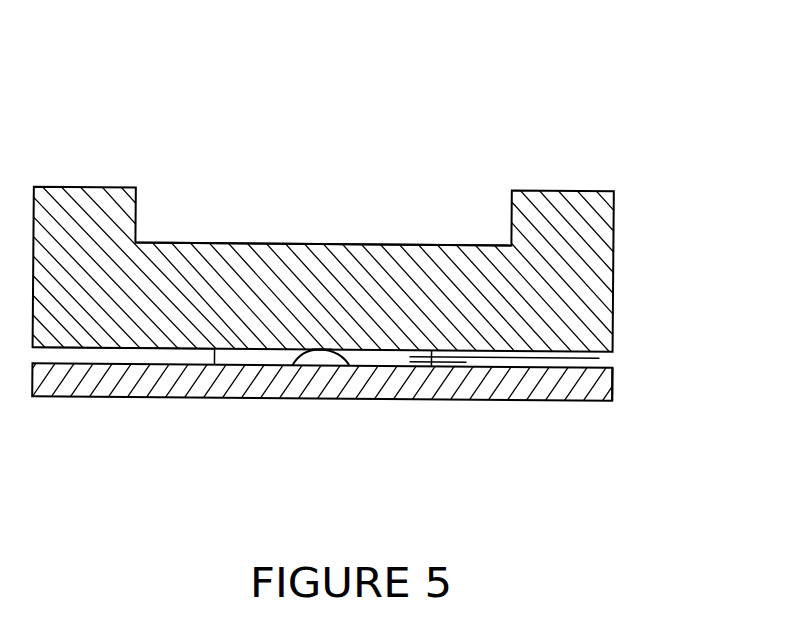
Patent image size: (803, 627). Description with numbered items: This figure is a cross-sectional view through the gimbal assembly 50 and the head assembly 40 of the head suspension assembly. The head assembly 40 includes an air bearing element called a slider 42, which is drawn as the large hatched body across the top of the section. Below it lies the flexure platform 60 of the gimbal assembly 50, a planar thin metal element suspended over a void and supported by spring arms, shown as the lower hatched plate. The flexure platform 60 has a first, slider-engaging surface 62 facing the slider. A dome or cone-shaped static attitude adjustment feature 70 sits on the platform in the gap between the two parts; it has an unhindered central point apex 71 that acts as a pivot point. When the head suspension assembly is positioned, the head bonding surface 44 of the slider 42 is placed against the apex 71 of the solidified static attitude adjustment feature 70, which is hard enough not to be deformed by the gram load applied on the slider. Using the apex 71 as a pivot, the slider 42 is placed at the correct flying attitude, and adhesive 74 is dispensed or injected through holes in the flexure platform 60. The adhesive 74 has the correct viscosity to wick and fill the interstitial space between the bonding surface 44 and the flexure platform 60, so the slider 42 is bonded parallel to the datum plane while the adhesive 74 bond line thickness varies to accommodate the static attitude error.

The head assembly 40 is at (79, 185).
The slider 42 is at (316, 243).
The head bonding surface 44 is at (75, 352).
The gimbal assembly 50 is at (625, 387).
The flexure platform 60 is at (425, 377).
The first (slider-engaging) surface 62 is at (600, 356).
The static attitude adjustment feature 70 is at (326, 355).
The apex 71 is at (328, 350).
The adhesive 74 is at (467, 361).